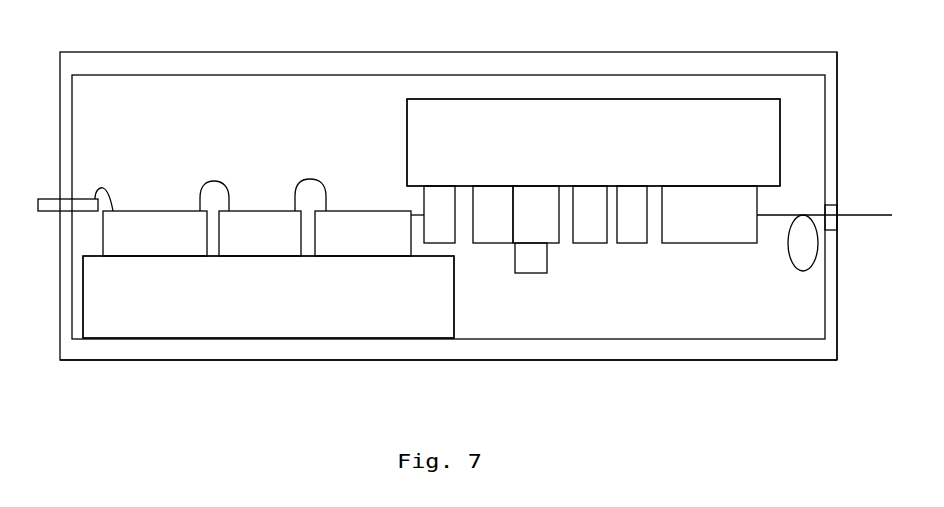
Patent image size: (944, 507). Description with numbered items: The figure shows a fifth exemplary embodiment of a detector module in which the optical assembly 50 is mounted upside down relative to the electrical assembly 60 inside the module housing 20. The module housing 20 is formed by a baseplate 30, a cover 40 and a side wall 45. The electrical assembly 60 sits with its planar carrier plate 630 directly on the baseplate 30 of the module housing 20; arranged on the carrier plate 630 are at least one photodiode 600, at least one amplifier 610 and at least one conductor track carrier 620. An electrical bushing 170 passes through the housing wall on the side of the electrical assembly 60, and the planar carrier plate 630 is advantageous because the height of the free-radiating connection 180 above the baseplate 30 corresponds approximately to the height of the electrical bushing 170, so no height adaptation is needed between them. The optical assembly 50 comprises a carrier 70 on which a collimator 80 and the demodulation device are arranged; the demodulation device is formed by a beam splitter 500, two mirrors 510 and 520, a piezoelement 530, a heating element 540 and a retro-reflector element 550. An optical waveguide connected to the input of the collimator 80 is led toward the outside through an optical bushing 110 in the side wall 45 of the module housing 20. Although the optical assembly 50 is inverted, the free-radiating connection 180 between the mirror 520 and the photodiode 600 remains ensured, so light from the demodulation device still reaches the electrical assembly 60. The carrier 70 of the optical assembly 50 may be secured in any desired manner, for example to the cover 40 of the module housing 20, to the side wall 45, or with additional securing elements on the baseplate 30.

The module housing 20 is at (470, 63).
The baseplate 30 is at (631, 348).
The cover 40 is at (587, 63).
The side wall 45 is at (837, 135).
The optical assembly 50 is at (448, 159).
The electrical assembly 60 is at (405, 296).
The carrier 70 is at (593, 142).
The collimator 80 is at (709, 214).
The optical bushing 110 is at (834, 213).
The electrical bushing 170 is at (68, 203).
The free-radiating connection 180 is at (386, 185).
The beam splitter 500 is at (633, 230).
The mirror 510 is at (590, 214).
The mirror 520 is at (439, 214).
The piezoelement 530 is at (493, 214).
The heating element 540 is at (528, 258).
The retro-reflector element 550 is at (536, 214).
The photodiode 600 is at (363, 233).
The amplifier 610 is at (260, 233).
The conductor track carrier 620 is at (155, 233).
The carrier plate 630 is at (268, 297).